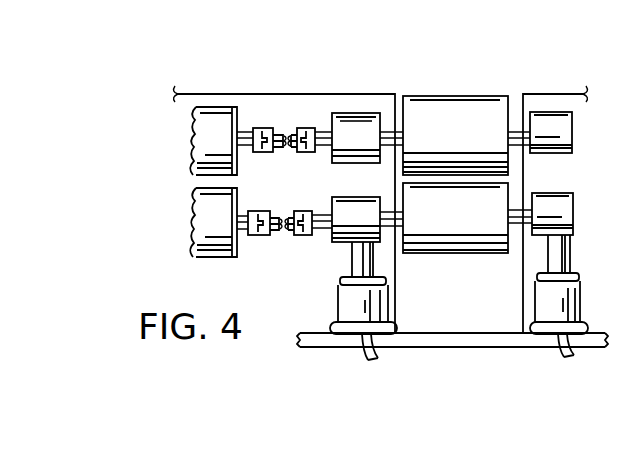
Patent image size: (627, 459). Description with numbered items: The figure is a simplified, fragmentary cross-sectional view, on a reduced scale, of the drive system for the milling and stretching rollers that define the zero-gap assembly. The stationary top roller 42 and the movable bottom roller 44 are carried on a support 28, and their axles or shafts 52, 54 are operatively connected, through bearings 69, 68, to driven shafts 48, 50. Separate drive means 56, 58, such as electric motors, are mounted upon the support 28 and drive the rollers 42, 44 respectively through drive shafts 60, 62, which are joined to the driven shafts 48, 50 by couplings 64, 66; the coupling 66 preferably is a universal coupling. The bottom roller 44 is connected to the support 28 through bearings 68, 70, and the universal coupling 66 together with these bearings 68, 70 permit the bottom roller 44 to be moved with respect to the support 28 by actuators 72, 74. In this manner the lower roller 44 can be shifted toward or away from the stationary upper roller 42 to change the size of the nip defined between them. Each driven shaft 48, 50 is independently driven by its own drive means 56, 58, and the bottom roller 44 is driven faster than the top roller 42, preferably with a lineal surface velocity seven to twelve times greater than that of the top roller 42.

The support 28 is at (370, 94).
The top roller 42 is at (437, 137).
The bottom roller 44 is at (438, 224).
The driven shaft 48 is at (323, 131).
The driven shaft 50 is at (325, 237).
The shaft 52 is at (389, 128).
The shaft 54 is at (392, 218).
The drive means 56 is at (214, 113).
The drive means 58 is at (216, 256).
The drive shaft 60 is at (279, 129).
The drive shaft 62 is at (270, 238).
The coupling 64 is at (304, 129).
The universal coupling 66 is at (292, 236).
The bearing 68 is at (381, 233).
The bearing 69 is at (352, 125).
The bearing 70 is at (566, 213).
The actuator 72 is at (387, 303).
The actuator 74 is at (574, 295).